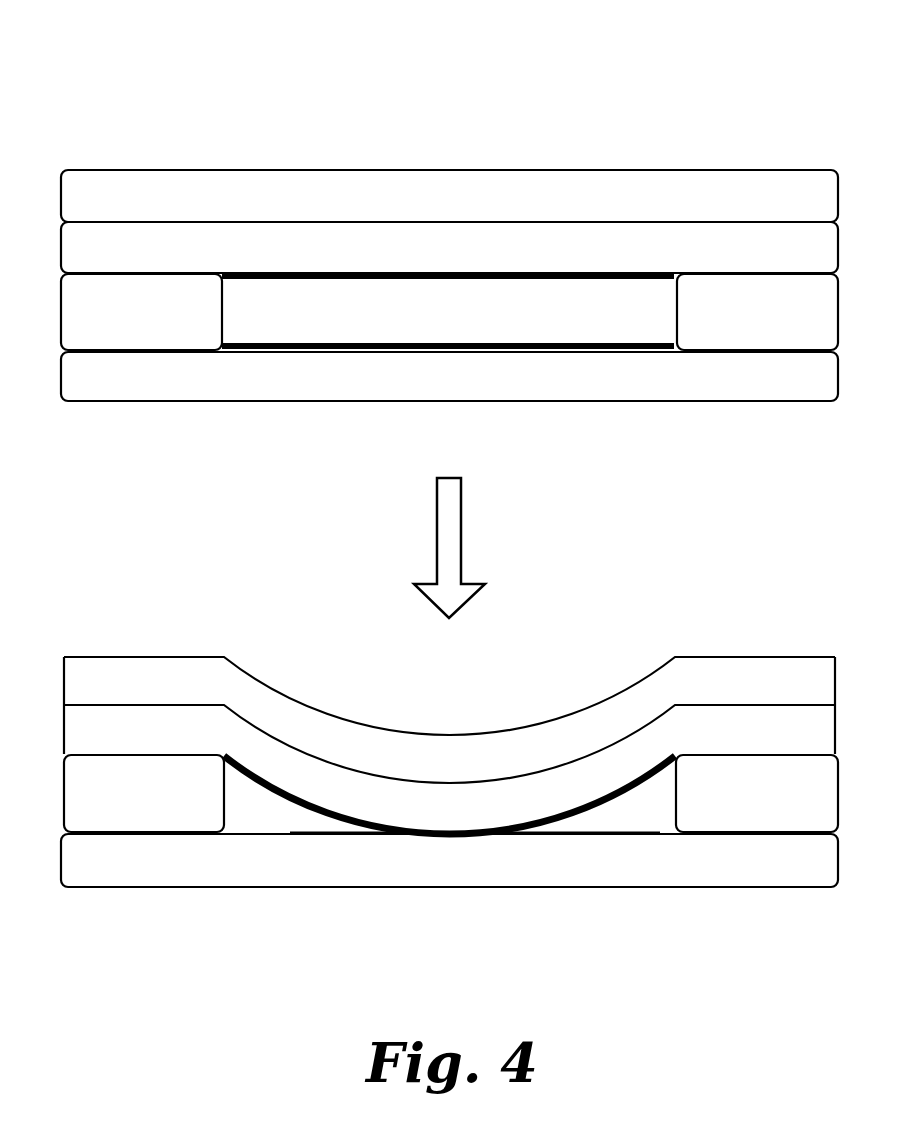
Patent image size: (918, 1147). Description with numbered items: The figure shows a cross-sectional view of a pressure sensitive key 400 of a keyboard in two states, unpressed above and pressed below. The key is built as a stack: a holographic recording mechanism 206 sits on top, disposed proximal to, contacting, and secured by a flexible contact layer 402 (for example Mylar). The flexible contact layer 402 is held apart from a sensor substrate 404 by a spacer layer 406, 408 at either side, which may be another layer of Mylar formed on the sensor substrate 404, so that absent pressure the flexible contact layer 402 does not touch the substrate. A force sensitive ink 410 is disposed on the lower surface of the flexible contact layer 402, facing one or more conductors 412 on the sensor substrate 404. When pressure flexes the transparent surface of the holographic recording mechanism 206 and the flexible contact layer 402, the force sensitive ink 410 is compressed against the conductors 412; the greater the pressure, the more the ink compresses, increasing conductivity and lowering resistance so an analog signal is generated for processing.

The pressure sensitive key 400 is at (130, 63).
The holographic recording mechanism 206 is at (449, 476).
The flexible contact layer 402 is at (449, 521).
The sensor substrate 404 is at (449, 619).
The spacer layer 406 is at (142, 553).
The spacer layer 408 is at (757, 553).
The force sensitive ink 410 is at (589, 280).
The conductors 412 is at (433, 341).